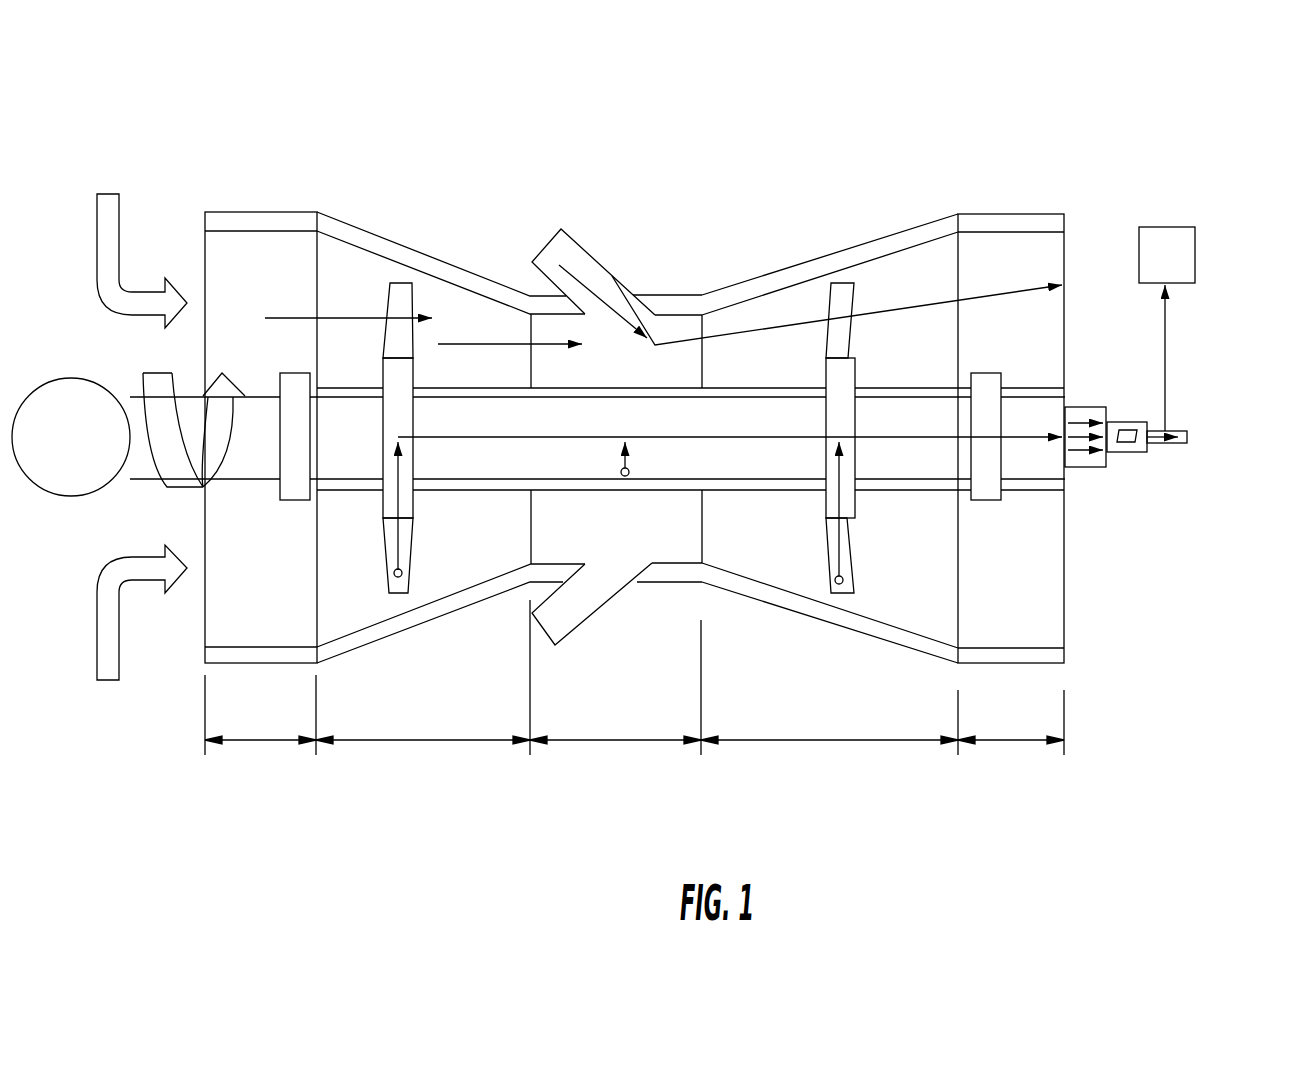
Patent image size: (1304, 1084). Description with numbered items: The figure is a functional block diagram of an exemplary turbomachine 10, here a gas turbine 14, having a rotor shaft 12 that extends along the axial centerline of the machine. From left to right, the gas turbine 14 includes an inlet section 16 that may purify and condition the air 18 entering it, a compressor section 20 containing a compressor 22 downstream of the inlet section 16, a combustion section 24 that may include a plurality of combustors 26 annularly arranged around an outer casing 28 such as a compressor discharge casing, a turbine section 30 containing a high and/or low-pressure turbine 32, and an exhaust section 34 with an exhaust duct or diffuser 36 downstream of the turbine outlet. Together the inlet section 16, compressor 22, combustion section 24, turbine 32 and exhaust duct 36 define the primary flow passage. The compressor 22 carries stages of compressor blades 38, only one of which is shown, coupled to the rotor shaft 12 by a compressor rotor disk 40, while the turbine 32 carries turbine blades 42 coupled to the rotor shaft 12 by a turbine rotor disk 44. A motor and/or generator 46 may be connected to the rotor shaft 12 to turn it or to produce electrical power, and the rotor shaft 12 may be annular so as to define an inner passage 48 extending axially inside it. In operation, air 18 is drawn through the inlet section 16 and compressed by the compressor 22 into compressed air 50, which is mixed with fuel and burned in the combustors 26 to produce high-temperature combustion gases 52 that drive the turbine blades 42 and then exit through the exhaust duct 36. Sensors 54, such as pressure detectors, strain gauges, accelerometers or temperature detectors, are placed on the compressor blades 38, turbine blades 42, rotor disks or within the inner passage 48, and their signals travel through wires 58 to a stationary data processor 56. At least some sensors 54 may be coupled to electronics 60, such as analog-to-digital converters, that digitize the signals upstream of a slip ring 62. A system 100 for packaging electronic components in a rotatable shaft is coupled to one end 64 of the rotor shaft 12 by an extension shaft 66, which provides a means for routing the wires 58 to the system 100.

The turbomachine 10 is at (972, 150).
The rotor shaft 12 is at (571, 400).
The gas turbine 14 is at (597, 843).
The inlet section 16 is at (252, 740).
The air 18 is at (108, 225).
The compressor section 20 is at (408, 740).
The compressor 22 is at (428, 620).
The combustion section 24 is at (612, 740).
The combustor 26 is at (598, 614).
The outer casing 28 is at (680, 573).
The turbine section 30 is at (812, 740).
The turbine 32 is at (803, 620).
The exhaust section 34 is at (1008, 740).
The exhaust duct 36 is at (1027, 670).
The compressor blades 38 is at (408, 548).
The compressor rotor disk 40 is at (412, 375).
The turbine blades 42 is at (850, 550).
The turbine rotor disk 44 is at (858, 374).
The motor and/or generator 46 is at (84, 451).
The inner passage 48 is at (729, 412).
The compressed air 50 is at (547, 345).
The combustion gases 52 is at (613, 305).
The sensors 54 is at (403, 573).
The stationary data processor 56 is at (1180, 269).
The wires 58 is at (472, 437).
The electronics 60 is at (1126, 441).
The slip ring 62 is at (1188, 437).
The end of the rotor shaft 64 is at (1068, 470).
The extension shaft 66 is at (1090, 407).
The system for packaging electronic components in a rotatable shaft 100 is at (1126, 412).